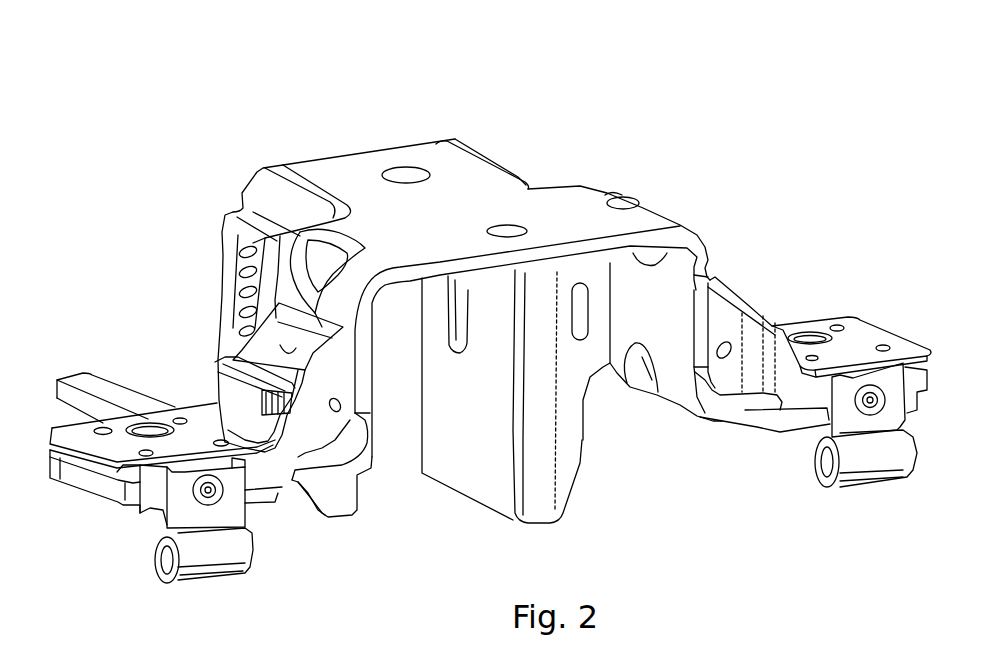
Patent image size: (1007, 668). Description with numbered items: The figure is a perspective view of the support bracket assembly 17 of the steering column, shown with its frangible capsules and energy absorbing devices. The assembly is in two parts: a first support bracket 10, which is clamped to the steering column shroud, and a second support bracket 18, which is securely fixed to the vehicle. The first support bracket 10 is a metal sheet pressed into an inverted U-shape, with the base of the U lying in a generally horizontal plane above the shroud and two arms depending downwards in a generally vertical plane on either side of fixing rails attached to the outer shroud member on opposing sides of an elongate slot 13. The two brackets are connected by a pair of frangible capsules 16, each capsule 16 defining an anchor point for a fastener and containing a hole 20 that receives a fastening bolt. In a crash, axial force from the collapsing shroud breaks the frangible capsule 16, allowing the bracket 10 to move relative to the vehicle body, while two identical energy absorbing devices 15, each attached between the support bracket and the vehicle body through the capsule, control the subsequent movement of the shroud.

The first support bracket 10 is at (333, 170).
The support bracket assembly 17 is at (462, 173).
The elongate slot 13 is at (460, 330).
The second support bracket 18 is at (155, 425).
The frangible capsule 16 is at (143, 450).
The hole 20 is at (138, 455).
The energy absorbing device 15 is at (218, 557).